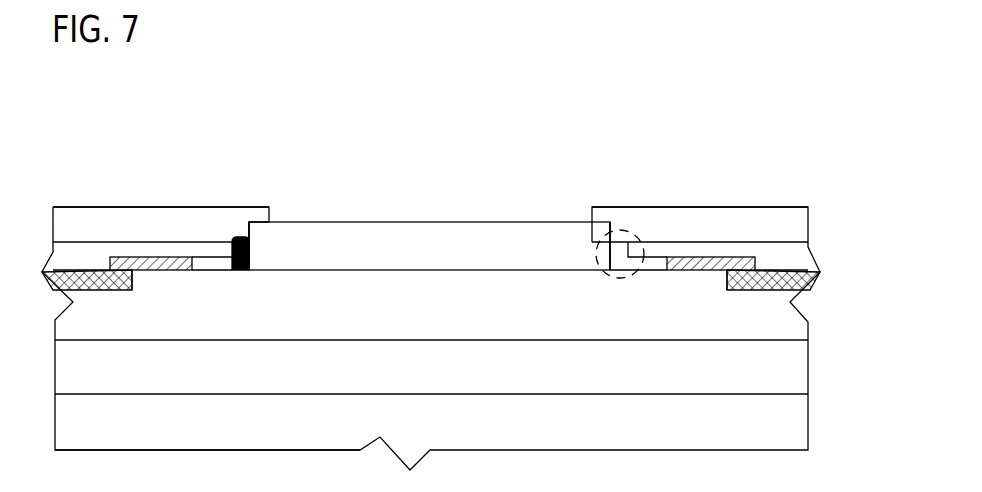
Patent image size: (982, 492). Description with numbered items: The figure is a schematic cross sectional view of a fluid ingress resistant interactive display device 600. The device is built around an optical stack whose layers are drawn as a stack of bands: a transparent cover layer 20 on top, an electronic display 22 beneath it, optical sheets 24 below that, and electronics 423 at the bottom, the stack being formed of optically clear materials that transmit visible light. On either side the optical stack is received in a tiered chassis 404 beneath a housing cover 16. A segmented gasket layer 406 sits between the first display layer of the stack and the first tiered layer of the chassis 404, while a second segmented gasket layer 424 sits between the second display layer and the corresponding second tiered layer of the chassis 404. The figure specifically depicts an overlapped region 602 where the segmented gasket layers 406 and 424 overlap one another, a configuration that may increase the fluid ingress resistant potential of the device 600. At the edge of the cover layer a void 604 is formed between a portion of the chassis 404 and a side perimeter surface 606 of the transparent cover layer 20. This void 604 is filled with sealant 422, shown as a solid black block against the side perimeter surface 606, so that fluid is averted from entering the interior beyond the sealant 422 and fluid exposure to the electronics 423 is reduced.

The fluid ingress resistant interactive display device 600 is at (574, 100).
The housing cover 16 is at (134, 231).
The transparent cover layer 20 is at (567, 256).
The electronic display 22 is at (535, 315).
The optical sheets 24 is at (515, 375).
The electronics 423 is at (507, 433).
The tiered chassis 404 is at (66, 263).
The segmented gasket layer 406 is at (155, 275).
The second segmented gasket layer 424 is at (118, 291).
The overlapped region 602 is at (138, 285).
The sealant 422 is at (240, 235).
The side perimeter surface 606 is at (600, 247).
The void 604 is at (630, 223).